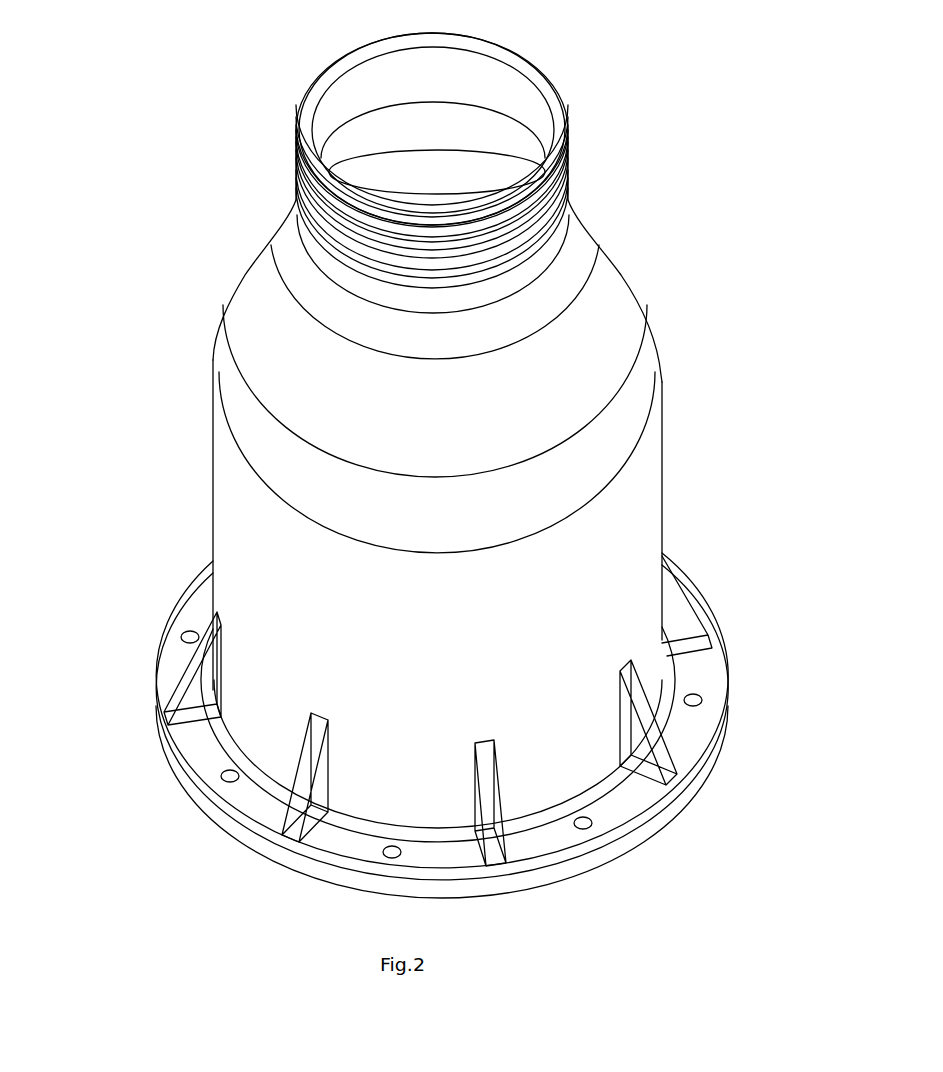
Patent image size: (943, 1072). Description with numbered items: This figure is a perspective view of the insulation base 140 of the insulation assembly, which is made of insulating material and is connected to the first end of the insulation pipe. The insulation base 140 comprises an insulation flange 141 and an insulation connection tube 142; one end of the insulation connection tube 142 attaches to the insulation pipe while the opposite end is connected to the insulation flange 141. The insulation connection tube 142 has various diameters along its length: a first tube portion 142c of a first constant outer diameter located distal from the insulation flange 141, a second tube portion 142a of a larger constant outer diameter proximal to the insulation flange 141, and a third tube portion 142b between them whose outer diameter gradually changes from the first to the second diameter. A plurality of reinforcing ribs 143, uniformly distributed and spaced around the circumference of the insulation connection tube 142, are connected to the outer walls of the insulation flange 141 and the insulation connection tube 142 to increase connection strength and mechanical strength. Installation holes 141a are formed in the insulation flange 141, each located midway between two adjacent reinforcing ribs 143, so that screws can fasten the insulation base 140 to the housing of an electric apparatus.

The insulation base 140 is at (427, 465).
The insulation flange 141 is at (500, 725).
The installation holes 141a is at (696, 696).
The insulation connection tube 142 is at (336, 361).
The second tube portion 142a is at (235, 532).
The third tube portion 142b is at (253, 353).
The first tube portion 142c is at (296, 108).
The reinforcing ribs 143 is at (298, 798).